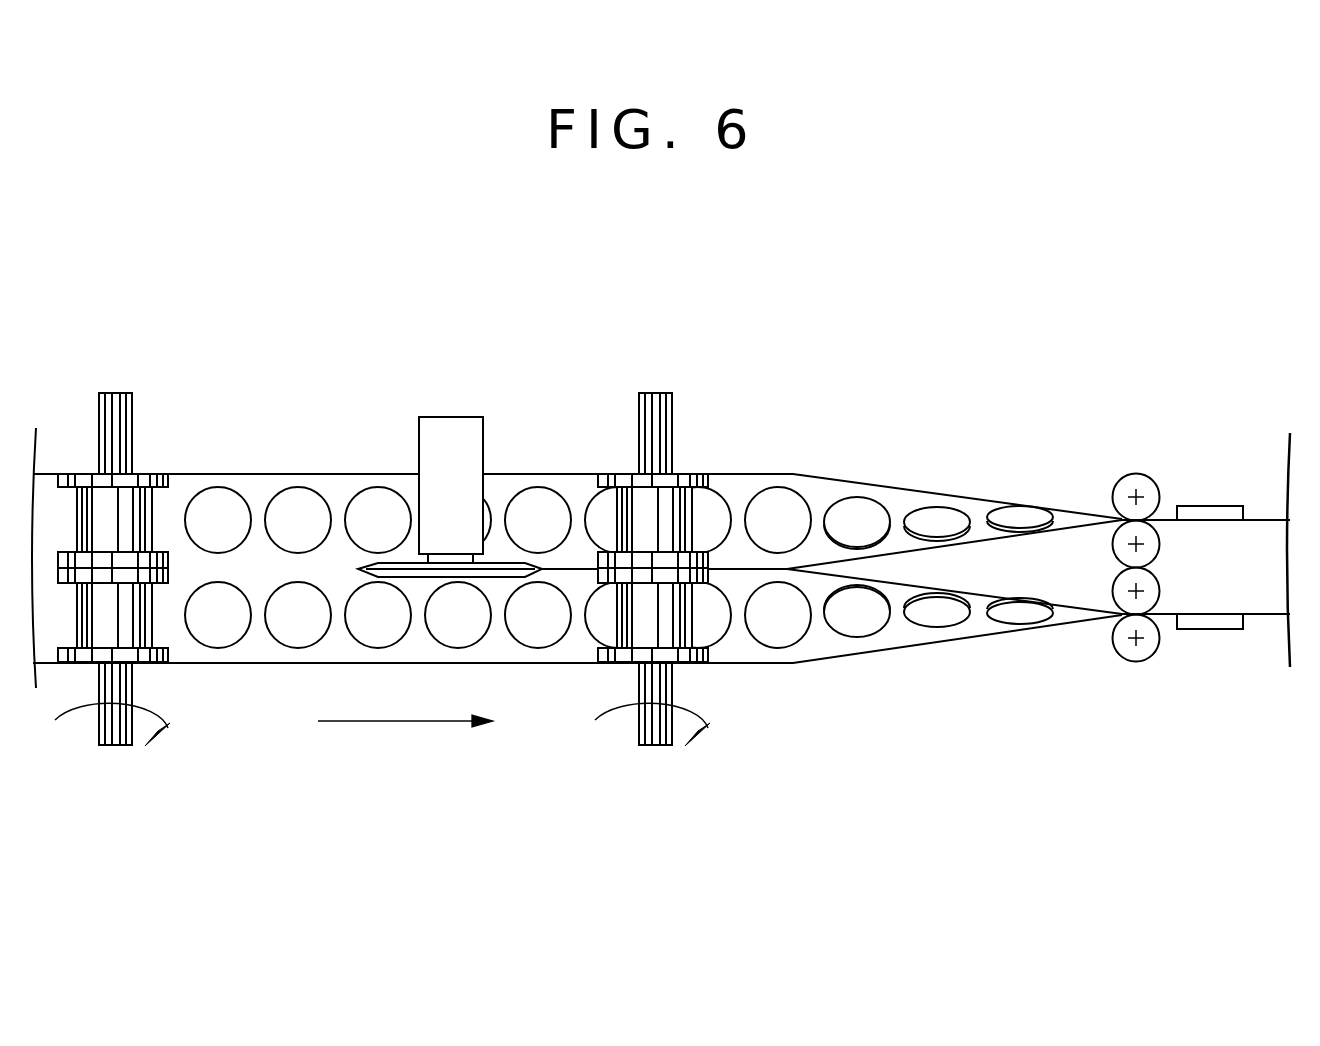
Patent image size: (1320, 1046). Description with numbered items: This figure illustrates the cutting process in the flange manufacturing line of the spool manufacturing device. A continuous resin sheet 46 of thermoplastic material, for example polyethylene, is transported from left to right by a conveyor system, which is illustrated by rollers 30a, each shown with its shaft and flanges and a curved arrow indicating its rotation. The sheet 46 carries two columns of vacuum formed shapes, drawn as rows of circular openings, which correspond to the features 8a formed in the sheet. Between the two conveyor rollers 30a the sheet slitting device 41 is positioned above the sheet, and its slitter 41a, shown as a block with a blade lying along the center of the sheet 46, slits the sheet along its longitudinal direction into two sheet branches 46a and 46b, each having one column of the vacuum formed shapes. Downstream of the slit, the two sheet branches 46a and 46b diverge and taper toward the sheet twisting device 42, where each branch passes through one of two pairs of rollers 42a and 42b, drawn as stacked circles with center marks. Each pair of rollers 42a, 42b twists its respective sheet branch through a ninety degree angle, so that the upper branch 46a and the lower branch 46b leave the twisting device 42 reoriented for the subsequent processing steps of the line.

The sheet slitting device 41 is at (445, 414).
The slitter 41a is at (463, 432).
The sheet twisting device 42 is at (1132, 496).
The pair of rollers 42a is at (1136, 474).
The pair of rollers 42b is at (1136, 662).
The resin sheet 46 is at (272, 483).
The sheet branch 46a is at (890, 497).
The sheet branch 46b is at (905, 635).
The sprocket holes 8a is at (218, 638).
The rollers 30a is at (112, 745).